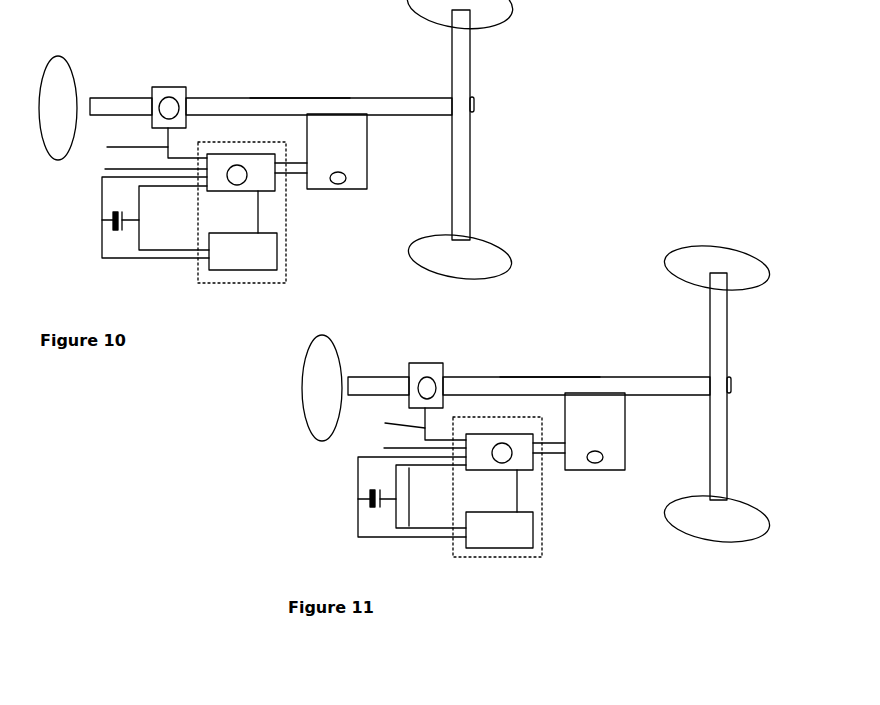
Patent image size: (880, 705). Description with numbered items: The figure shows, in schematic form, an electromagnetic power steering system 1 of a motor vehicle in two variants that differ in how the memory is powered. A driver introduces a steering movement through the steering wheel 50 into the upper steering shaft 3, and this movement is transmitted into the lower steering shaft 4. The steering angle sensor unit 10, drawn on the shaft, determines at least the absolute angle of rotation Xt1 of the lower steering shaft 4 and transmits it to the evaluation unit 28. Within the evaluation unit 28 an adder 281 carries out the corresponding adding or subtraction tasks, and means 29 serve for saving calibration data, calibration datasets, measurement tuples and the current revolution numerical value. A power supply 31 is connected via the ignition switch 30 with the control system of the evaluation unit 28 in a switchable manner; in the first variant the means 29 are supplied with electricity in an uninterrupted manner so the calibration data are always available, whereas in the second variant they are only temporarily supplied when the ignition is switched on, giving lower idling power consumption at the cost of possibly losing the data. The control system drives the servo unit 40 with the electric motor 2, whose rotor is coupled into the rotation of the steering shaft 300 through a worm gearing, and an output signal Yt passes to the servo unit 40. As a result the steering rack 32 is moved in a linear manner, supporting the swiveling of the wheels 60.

In FIG. 10, the electromagnetic power steering system 1 is at (268, 27).
In FIG. 11, the electromagnetic power steering system 1 is at (495, 338).
In FIG. 10, the electric motor 2 is at (347, 180).
In FIG. 11, the electric motor 2 is at (603, 460).
In FIG. 10, the upper steering shaft 3 is at (108, 107).
In FIG. 11, the upper steering shaft 3 is at (370, 385).
In FIG. 10, the lower steering shaft 4 is at (347, 103).
In FIG. 11, the lower steering shaft 4 is at (619, 387).
In FIG. 10, the steering angle sensor unit 10 is at (160, 97).
In FIG. 11, the steering angle sensor unit 10 is at (417, 373).
In FIG. 10, the evaluation unit 28 is at (233, 143).
In FIG. 11, the evaluation unit 28 is at (525, 418).
In FIG. 10, the means for saving calibration data 29 is at (260, 252).
In FIG. 11, the means for saving calibration data 29 is at (527, 538).
In FIG. 10, the ignition switch 30 is at (152, 187).
In FIG. 11, the ignition switch 30 is at (410, 498).
In FIG. 10, the power supply 31 is at (146, 237).
In FIG. 11, the power supply 31 is at (368, 508).
In FIG. 10, the steering rack 32 is at (462, 138).
In FIG. 11, the steering rack 32 is at (717, 335).
In FIG. 10, the servo unit 40 is at (348, 138).
In FIG. 11, the servo unit 40 is at (600, 413).
In FIG. 10, the steering wheel 50 is at (48, 148).
In FIG. 11, the steering wheel 50 is at (315, 413).
In FIG. 10, the wheels 60 is at (495, 13).
In FIG. 11, the wheels 60 is at (720, 265).
In FIG. 10, the adder 281 is at (235, 174).
In FIG. 11, the adder 281 is at (500, 450).
In FIG. 10, the steering shaft 300 is at (298, 110).
In FIG. 11, the steering shaft 300 is at (460, 383).
In FIG. 10, the absolute angle of rotation Xt1 is at (143, 143).
In FIG. 11, the absolute angle of rotation Xt1 is at (411, 424).
In FIG. 10, the signal Yt is at (287, 165).
In FIG. 11, the signal Yt is at (545, 443).